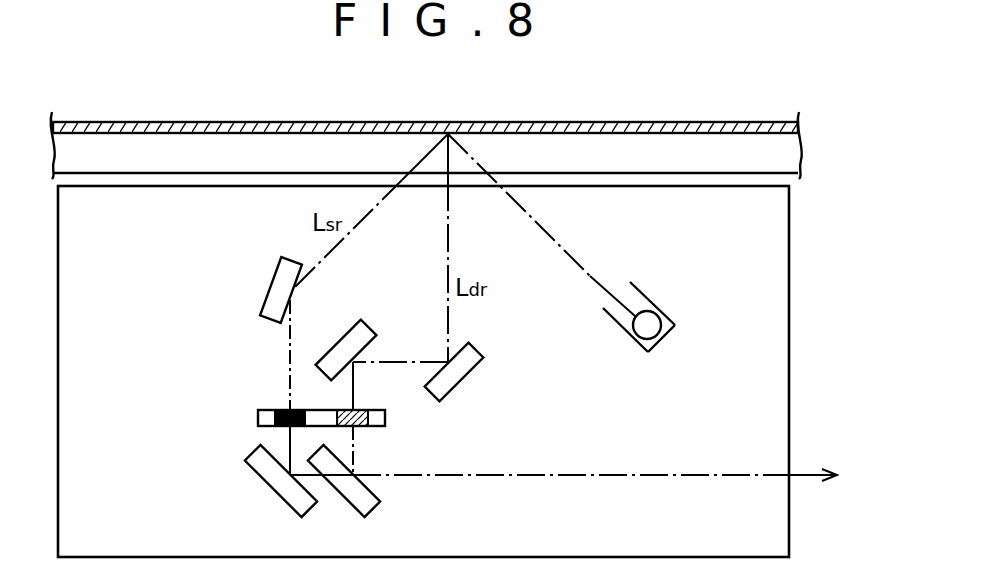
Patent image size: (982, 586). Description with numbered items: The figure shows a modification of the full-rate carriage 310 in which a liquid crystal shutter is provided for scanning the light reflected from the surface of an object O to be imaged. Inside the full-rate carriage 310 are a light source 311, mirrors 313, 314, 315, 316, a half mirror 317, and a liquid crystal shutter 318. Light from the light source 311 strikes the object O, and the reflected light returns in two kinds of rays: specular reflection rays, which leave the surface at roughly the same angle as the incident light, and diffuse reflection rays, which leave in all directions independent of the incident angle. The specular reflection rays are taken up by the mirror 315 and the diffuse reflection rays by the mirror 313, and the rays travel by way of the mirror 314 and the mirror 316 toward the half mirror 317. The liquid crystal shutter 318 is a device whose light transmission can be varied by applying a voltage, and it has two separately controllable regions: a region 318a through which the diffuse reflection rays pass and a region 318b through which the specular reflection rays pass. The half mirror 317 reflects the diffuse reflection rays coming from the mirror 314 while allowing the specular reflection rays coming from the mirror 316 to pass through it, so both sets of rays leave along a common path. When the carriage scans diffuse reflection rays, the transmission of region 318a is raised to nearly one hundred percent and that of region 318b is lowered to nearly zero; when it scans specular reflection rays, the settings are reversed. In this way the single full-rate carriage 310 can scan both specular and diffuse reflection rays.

The object O is at (700, 123).
The full-rate carriage 310 is at (790, 250).
The light source 311 is at (663, 337).
The mirror 313 is at (458, 381).
The mirror 314 is at (350, 340).
The mirror 315 is at (271, 298).
The mirror 316 is at (263, 478).
The half mirror 317 is at (368, 506).
The liquid crystal shutter 318 is at (329, 408).
The region 318a is at (377, 399).
The region 318b is at (290, 411).